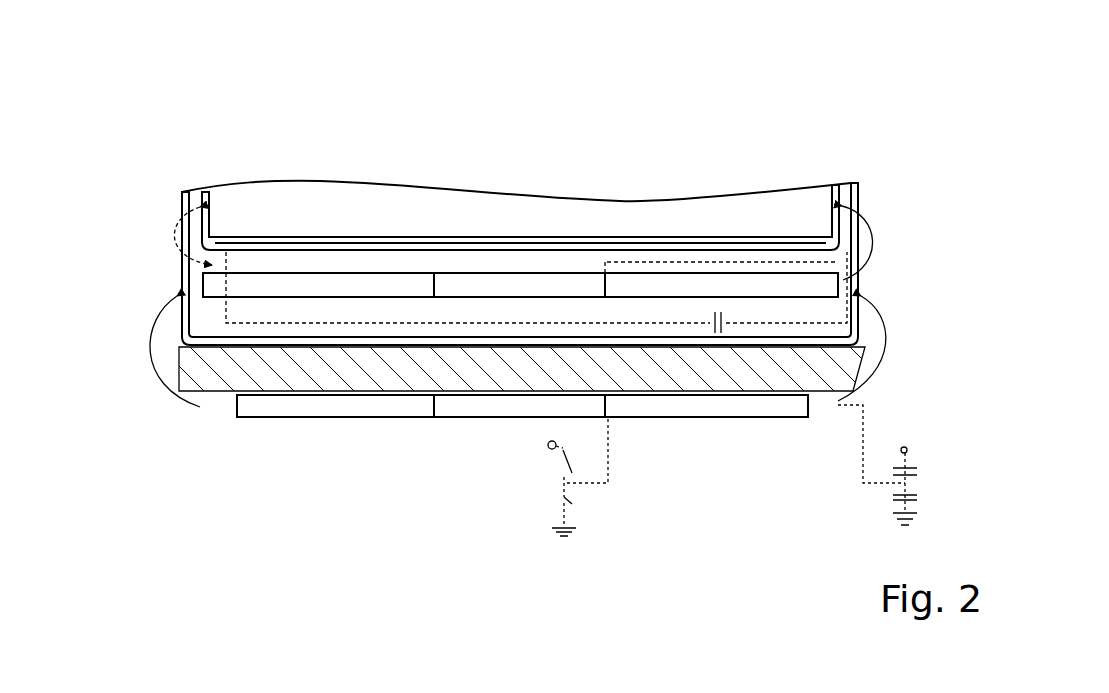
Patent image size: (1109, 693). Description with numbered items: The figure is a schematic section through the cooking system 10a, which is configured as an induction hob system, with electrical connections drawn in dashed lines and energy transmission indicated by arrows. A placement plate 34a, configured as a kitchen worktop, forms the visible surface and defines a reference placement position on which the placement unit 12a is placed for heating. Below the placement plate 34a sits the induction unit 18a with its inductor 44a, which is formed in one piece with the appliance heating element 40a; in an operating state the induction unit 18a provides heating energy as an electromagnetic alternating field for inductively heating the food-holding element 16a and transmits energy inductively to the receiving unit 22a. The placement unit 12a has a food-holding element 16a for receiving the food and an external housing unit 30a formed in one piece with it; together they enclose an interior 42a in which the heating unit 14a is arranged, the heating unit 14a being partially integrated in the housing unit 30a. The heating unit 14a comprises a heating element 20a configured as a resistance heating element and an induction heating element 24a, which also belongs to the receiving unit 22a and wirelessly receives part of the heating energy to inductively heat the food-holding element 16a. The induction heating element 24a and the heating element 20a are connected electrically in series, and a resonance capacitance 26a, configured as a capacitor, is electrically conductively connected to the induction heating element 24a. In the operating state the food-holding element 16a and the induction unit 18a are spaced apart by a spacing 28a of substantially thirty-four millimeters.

The cooking system 10a is at (841, 112).
The placement unit 12a is at (870, 203).
The heating unit 14a is at (455, 255).
The food-holding element 16a is at (397, 237).
The induction unit 18a is at (494, 462).
The heating element 20a is at (827, 256).
The receiving unit 22a is at (241, 204).
The induction heating element 24a is at (242, 285).
The resonance capacitance 26a is at (721, 333).
The spacing 28a is at (148, 346).
The housing unit 30a is at (840, 280).
The placement plate 34a is at (828, 365).
The appliance heating element 40a is at (522, 451).
The interior 42a is at (532, 268).
The inductor 44a is at (350, 407).